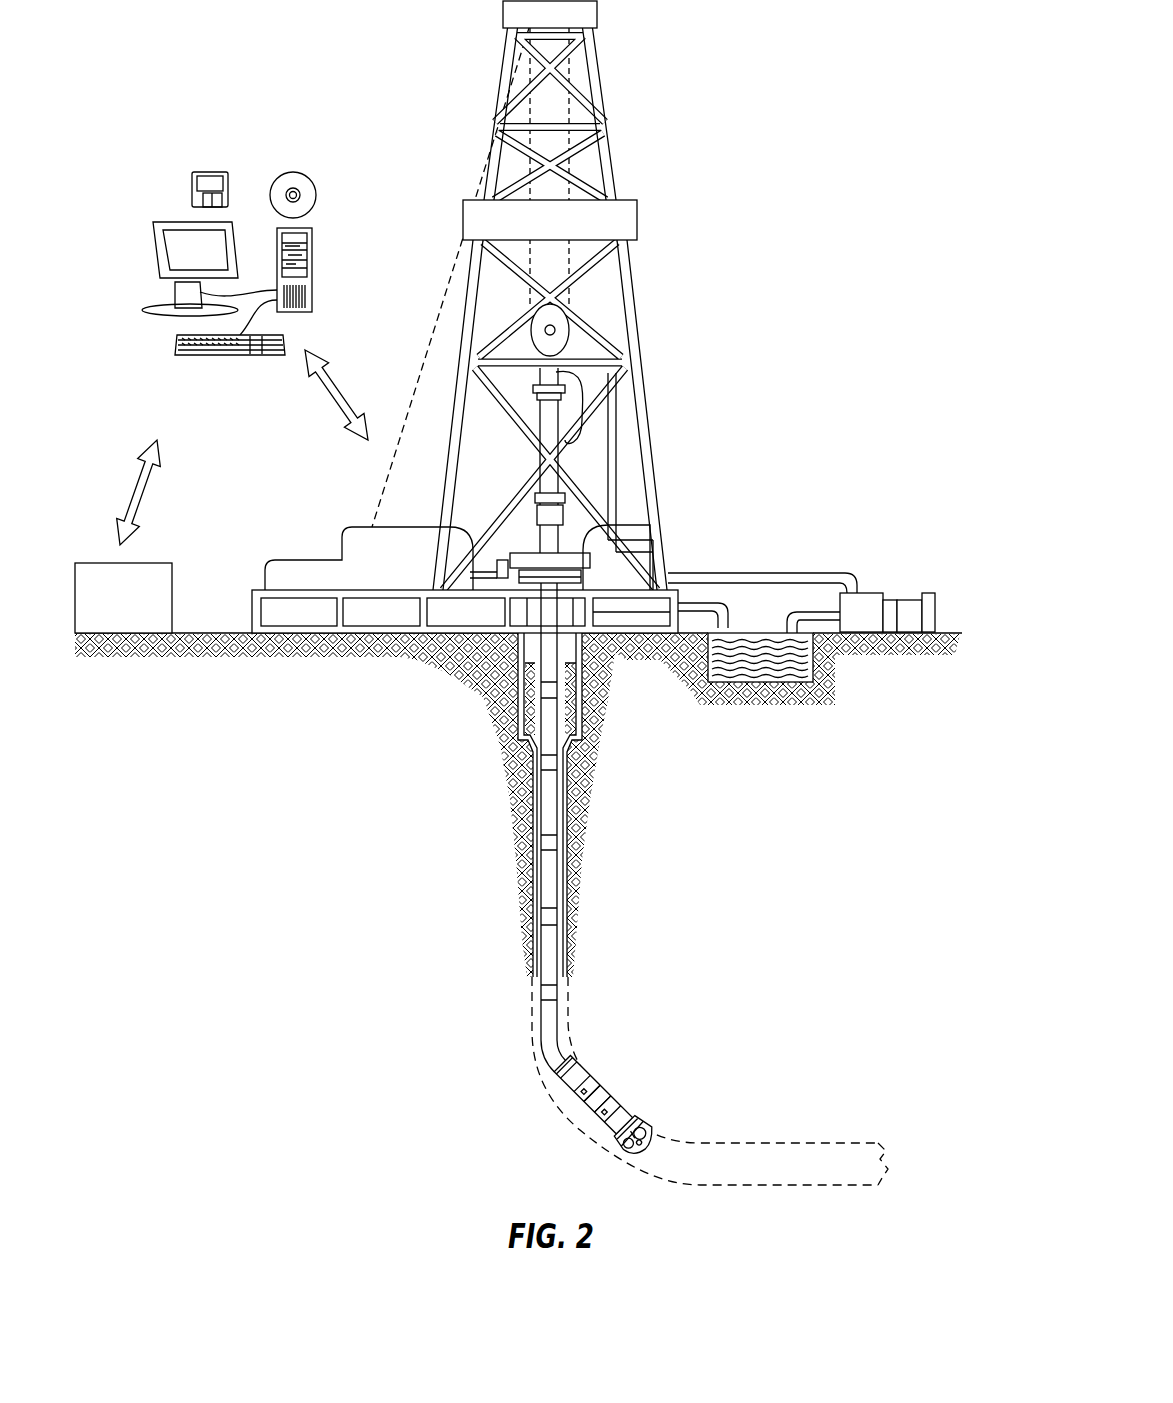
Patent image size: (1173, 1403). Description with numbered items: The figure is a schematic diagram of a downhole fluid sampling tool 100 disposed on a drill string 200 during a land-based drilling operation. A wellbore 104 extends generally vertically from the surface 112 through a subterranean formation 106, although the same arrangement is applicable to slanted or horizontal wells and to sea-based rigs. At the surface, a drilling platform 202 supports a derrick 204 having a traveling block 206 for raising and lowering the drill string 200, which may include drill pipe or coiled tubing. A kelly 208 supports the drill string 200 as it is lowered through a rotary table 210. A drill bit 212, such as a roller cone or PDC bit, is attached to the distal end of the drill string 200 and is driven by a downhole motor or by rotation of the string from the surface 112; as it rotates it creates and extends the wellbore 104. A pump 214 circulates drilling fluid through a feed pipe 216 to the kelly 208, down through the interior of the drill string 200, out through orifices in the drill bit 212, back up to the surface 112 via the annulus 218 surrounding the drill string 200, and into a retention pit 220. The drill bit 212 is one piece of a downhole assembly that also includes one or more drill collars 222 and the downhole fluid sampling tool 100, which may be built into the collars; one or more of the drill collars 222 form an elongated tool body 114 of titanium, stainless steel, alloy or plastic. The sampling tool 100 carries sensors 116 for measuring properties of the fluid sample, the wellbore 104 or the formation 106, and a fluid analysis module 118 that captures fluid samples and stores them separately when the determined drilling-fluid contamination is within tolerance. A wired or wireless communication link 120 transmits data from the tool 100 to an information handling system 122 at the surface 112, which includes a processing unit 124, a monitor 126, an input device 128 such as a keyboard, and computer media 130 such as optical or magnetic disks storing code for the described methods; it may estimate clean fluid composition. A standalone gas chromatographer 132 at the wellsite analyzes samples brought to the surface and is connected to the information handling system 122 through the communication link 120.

The downhole fluid sampling tool 100 is at (600, 1089).
The wellbore 104 is at (563, 837).
The subterranean formation 106 is at (801, 926).
The surface 112 is at (948, 632).
The tool body 114 is at (597, 1097).
The sensors 116 is at (603, 1115).
The fluid analysis module 118 is at (578, 1093).
The communication link 120 is at (328, 398).
The information handling system 122 is at (228, 270).
The processing unit 124 is at (312, 243).
The monitor 126 is at (160, 262).
The input device 128 is at (190, 358).
The computer media 130 is at (290, 172).
The gas chromatographer 132 is at (146, 613).
The drill string 200 is at (560, 820).
The drilling platform 202 is at (252, 612).
The derrick 204 is at (610, 145).
The traveling block 206 is at (573, 333).
The kelly 208 is at (550, 415).
The rotary table 210 is at (583, 547).
The drill bit 212 is at (647, 1120).
The pump 214 is at (870, 593).
The feed pipe 216 is at (790, 573).
The annulus 218 is at (530, 840).
The retention pit 220 is at (757, 667).
The drill collars 222 is at (603, 1103).